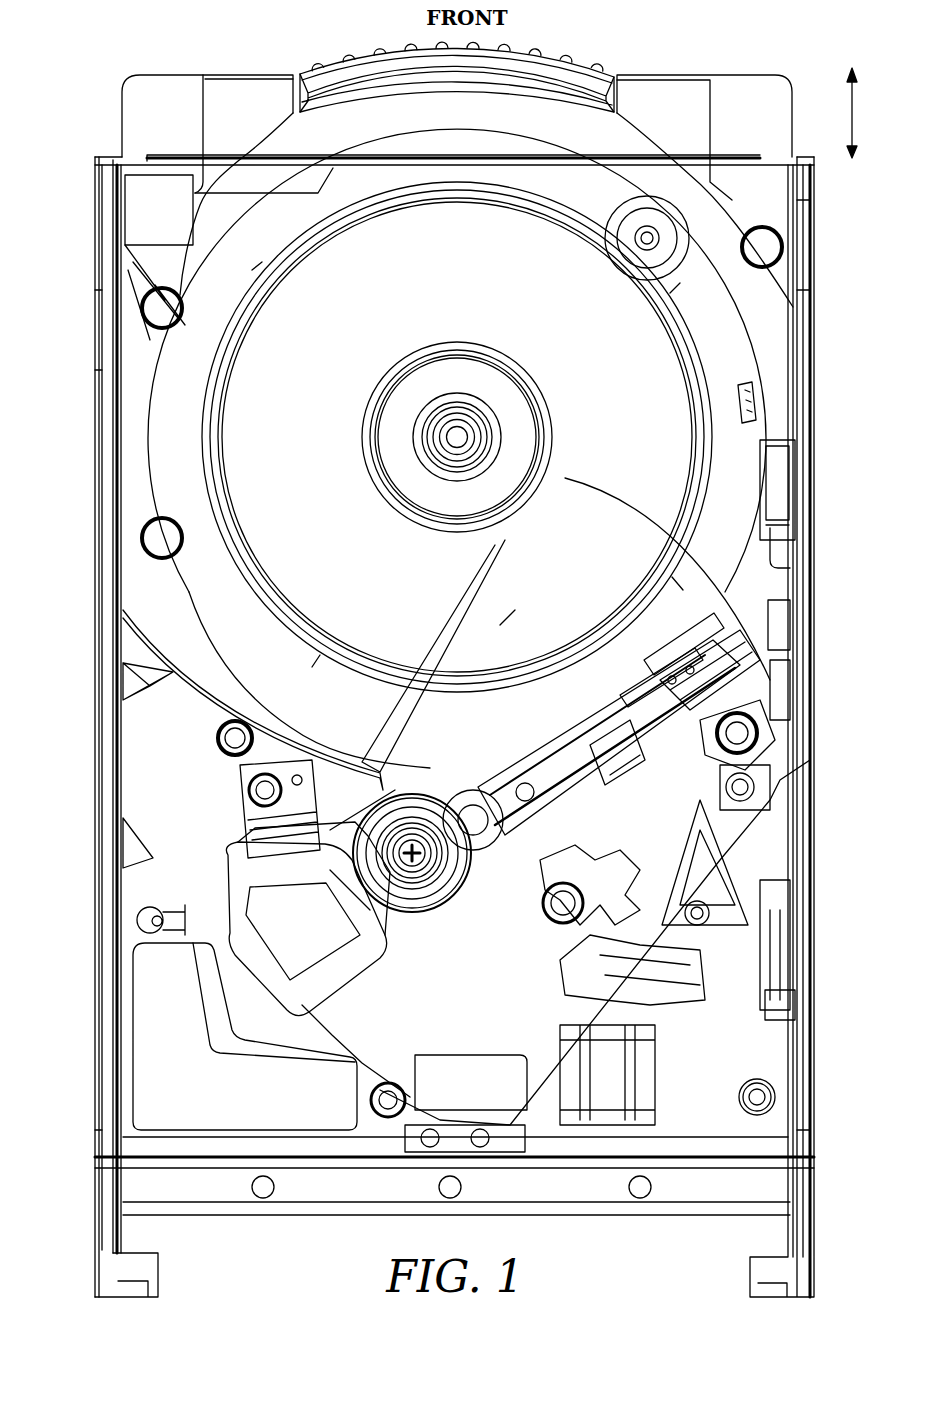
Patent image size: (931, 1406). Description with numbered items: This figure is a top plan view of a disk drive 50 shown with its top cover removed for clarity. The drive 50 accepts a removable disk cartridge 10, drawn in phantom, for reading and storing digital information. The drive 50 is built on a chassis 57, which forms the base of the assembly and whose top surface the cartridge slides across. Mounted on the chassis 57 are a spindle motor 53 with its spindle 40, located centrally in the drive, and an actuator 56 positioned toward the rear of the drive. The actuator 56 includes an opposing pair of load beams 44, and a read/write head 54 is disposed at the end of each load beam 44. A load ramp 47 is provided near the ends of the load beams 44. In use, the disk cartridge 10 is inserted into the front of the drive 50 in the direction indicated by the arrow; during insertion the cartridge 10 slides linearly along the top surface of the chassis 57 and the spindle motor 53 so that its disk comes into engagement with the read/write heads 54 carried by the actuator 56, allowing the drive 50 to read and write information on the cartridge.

The removable disk cartridge 10 is at (714, 60).
The spindle 40 is at (460, 434).
The load beams 44 is at (585, 756).
The load ramp 47 is at (722, 657).
The disk drive 50 is at (78, 806).
The spindle motor 53 is at (272, 379).
The read/write head 54 is at (740, 662).
The actuator 56 is at (406, 958).
The chassis 57 is at (184, 757).